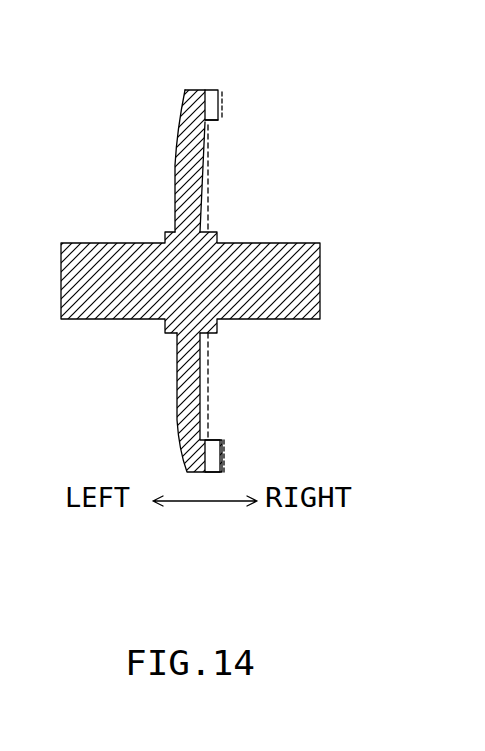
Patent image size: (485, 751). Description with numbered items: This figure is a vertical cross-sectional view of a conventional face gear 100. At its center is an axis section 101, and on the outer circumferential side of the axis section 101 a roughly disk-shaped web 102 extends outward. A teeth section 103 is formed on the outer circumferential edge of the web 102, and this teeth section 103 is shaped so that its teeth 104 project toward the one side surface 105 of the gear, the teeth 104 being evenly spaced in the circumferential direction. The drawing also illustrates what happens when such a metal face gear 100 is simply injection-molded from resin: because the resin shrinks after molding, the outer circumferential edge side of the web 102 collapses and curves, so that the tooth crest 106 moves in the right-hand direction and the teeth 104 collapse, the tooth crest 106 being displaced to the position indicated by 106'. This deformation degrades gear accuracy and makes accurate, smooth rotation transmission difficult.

The face gear 100 is at (162, 80).
The axis section 101 is at (279, 236).
The web 102 is at (168, 171).
The teeth section 103 is at (221, 84).
The teeth 104 is at (212, 121).
The one side surface 105 is at (201, 179).
The tooth crest 106 is at (270, 88).
The displaced tooth crest position 106' is at (282, 282).